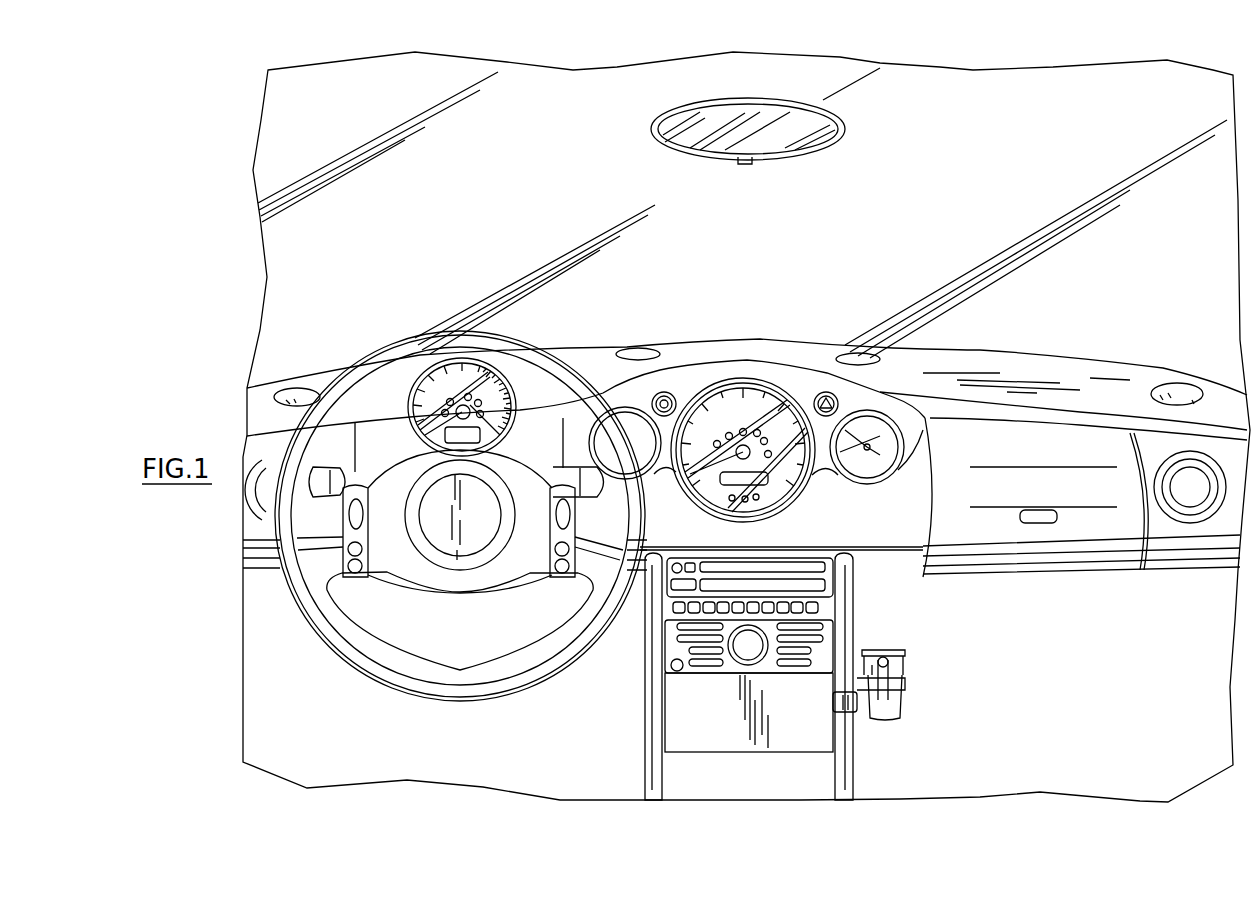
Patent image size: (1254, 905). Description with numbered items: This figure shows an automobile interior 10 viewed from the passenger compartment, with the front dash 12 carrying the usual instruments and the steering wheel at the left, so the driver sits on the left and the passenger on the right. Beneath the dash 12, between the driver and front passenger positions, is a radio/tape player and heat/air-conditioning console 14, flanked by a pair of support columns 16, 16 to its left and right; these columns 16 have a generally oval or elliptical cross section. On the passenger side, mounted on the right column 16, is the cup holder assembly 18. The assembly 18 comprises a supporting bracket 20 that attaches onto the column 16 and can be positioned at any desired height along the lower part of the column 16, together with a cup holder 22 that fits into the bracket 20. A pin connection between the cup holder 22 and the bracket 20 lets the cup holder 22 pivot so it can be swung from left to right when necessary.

The automobile interior 10 is at (845, 303).
The front dash 12 is at (1072, 373).
The comfort console 14 is at (700, 677).
The support columns 16 is at (645, 705).
The cup holder assembly 18 is at (927, 652).
The supporting bracket 20 is at (833, 705).
The cup holder 22 is at (908, 690).